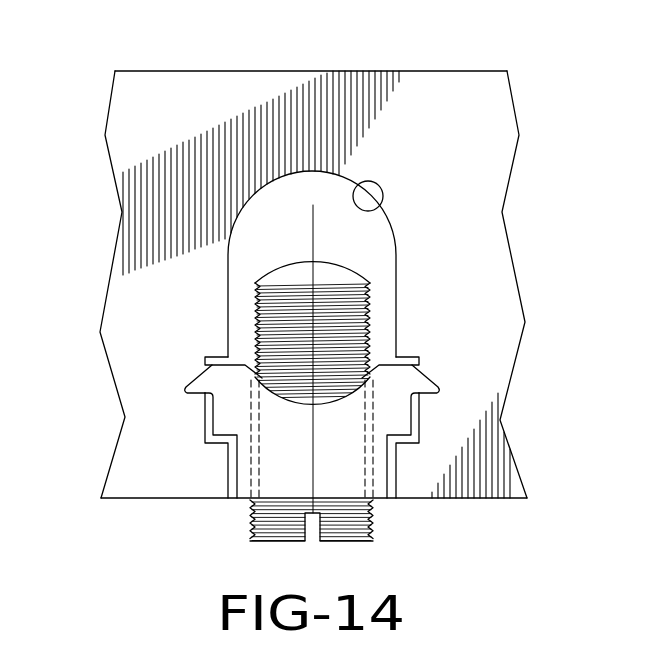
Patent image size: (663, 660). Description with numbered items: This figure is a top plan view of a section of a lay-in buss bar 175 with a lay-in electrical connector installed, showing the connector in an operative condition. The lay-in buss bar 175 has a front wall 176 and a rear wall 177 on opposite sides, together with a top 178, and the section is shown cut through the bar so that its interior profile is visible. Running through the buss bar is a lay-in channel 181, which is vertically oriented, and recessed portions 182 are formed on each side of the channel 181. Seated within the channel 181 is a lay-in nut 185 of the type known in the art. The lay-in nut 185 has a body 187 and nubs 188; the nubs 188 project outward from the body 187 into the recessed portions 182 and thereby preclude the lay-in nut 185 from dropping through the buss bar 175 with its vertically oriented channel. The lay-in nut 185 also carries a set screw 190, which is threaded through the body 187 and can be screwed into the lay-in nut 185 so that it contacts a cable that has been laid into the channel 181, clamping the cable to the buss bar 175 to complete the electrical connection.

The lay-in buss bar 175 is at (463, 69).
The front wall 176 is at (487, 500).
The rear wall 177 is at (230, 70).
The top 178 is at (465, 186).
The lay-in channel 181 is at (383, 212).
The recessed portions 182 is at (205, 407).
The lay-in nut 185 is at (343, 502).
The body 187 is at (275, 459).
The nubs 188 is at (200, 384).
The set screw 190 is at (345, 302).